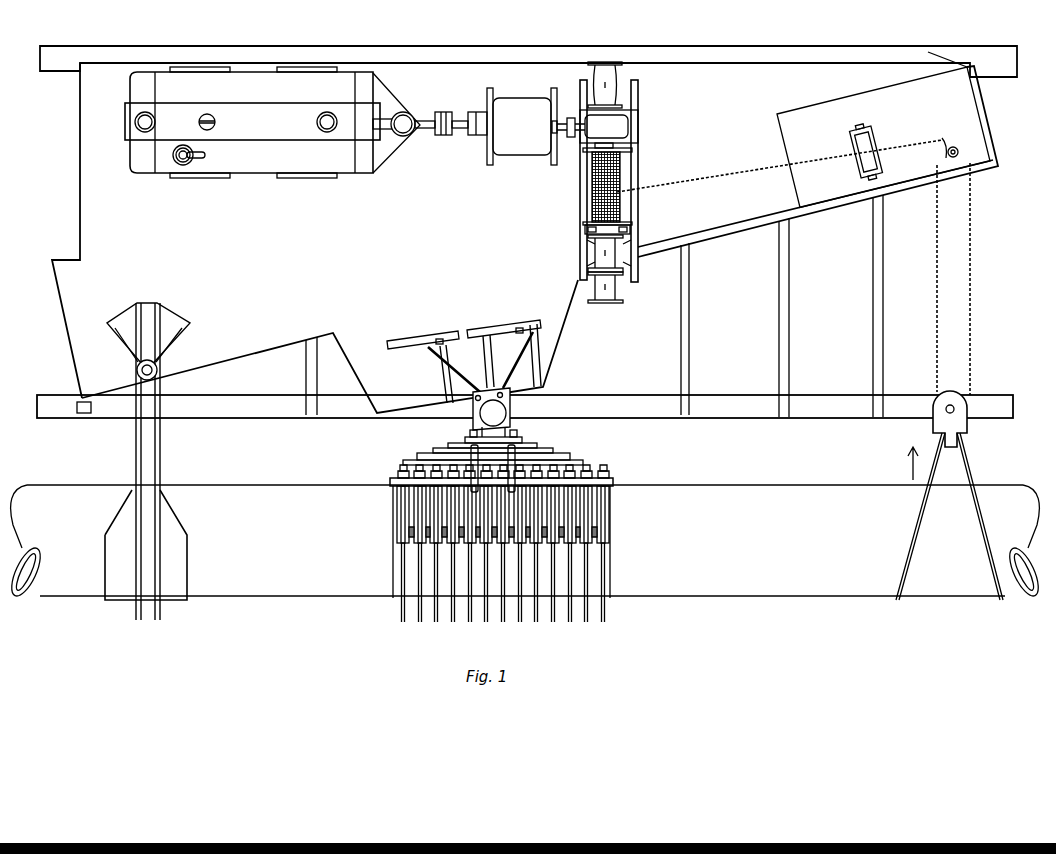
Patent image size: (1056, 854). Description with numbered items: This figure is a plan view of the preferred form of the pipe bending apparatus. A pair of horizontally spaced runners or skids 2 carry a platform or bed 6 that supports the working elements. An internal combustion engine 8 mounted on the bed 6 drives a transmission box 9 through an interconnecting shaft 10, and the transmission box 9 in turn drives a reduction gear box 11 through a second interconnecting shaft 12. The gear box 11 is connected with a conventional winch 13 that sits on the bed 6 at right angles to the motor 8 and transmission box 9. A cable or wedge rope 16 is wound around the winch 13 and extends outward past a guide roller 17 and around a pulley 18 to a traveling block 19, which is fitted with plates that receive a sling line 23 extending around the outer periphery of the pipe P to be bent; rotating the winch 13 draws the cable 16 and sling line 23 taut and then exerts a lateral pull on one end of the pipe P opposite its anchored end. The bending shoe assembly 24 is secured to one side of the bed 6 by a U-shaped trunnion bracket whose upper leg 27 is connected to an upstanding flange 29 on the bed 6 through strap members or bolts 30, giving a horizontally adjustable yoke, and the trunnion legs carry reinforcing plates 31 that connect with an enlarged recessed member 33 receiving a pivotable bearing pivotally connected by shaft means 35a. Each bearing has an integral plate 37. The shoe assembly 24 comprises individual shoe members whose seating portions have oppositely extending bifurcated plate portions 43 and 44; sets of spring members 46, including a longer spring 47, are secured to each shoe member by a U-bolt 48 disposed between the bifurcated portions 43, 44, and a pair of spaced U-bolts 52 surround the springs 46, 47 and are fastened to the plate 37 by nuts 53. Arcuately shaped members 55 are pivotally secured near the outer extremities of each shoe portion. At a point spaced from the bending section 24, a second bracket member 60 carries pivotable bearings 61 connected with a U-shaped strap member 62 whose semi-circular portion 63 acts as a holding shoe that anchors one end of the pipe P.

The runners or skids 2 is at (43, 70).
The platform or bed 6 is at (88, 173).
The internal combustion engine 8 is at (347, 167).
The transmission box 9 is at (522, 153).
The interconnecting shaft 10 is at (428, 130).
The reduction gear box 11 is at (617, 130).
The interconnecting shaft 12 is at (580, 137).
The winch 13 is at (587, 227).
The cable or wedge rope 16 is at (590, 187).
The guide roller 17 is at (877, 143).
The pulley 18 is at (940, 138).
The traveling block 19 is at (958, 410).
The sling line 23 is at (917, 538).
The bending shoe assembly 24 is at (495, 552).
The upper leg 27 is at (458, 350).
The upstanding flange 29 is at (495, 328).
The strap members or bolts 30 is at (490, 345).
The reinforcing plates 31 is at (432, 367).
The upper recessed member 33 is at (511, 400).
The shaft means 35a is at (487, 417).
The plate 37 is at (447, 438).
The bifurcated plate portion 43 is at (403, 505).
The bifurcated plate portion 44 is at (603, 523).
The spring members 46 is at (570, 460).
The longer spring 47 is at (613, 482).
The U-bolt 48 is at (402, 483).
The U-bolts 52 is at (512, 462).
The nuts 53 is at (522, 438).
The arcuately shaped member 55 is at (603, 577).
The second bracket member 60 is at (170, 353).
The pivotable bearings 61 is at (137, 370).
The U-shaped strap member 62 is at (135, 420).
The semi-circular portion 63 is at (173, 592).
The pipe P is at (877, 595).